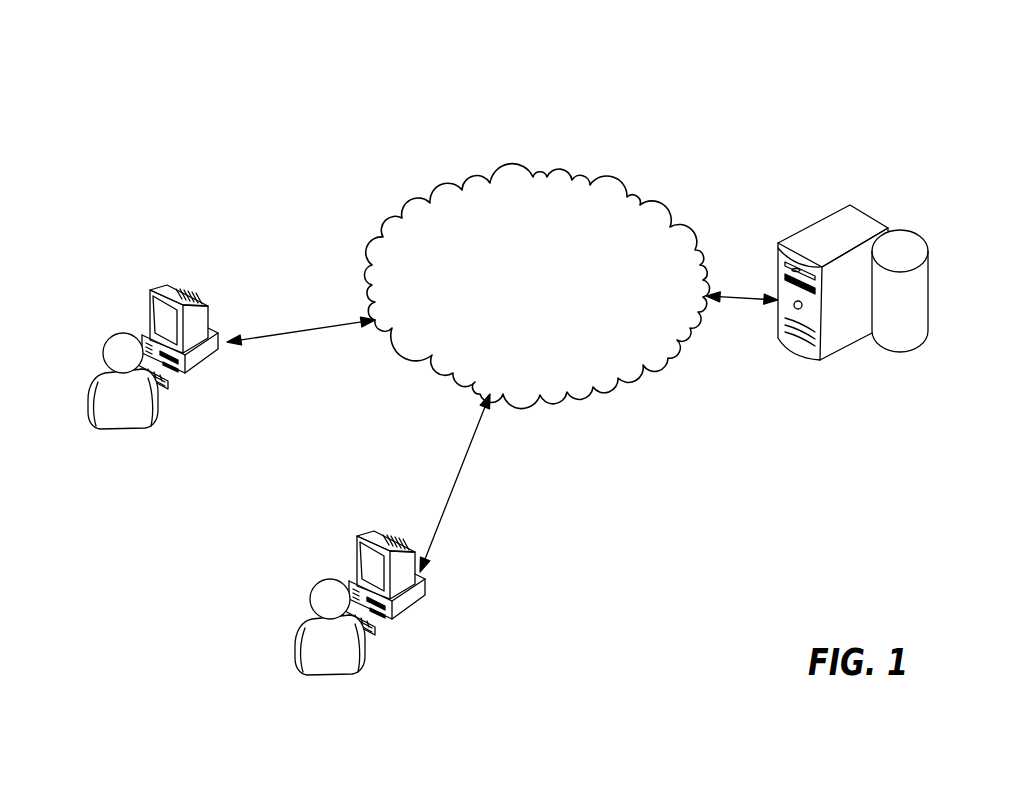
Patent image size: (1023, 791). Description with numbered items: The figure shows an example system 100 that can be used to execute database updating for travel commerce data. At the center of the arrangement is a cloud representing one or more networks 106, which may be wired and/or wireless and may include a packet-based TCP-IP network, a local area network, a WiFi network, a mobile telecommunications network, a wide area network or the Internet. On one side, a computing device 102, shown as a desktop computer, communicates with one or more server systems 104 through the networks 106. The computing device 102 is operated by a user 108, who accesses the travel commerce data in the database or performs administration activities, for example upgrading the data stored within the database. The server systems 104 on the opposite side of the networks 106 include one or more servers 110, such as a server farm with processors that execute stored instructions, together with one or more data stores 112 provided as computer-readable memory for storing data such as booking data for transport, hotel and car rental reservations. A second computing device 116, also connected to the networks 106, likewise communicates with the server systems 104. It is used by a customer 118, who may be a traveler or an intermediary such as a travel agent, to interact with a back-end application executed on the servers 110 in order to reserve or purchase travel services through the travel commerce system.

The example system 100 is at (716, 106).
The computing device 102 is at (200, 294).
The server system 104 is at (851, 313).
The network 106 is at (546, 177).
The user 108 is at (104, 430).
The server 110 is at (863, 213).
The data store 112 is at (921, 348).
The computing device 116 is at (398, 536).
The customer 118 is at (308, 677).